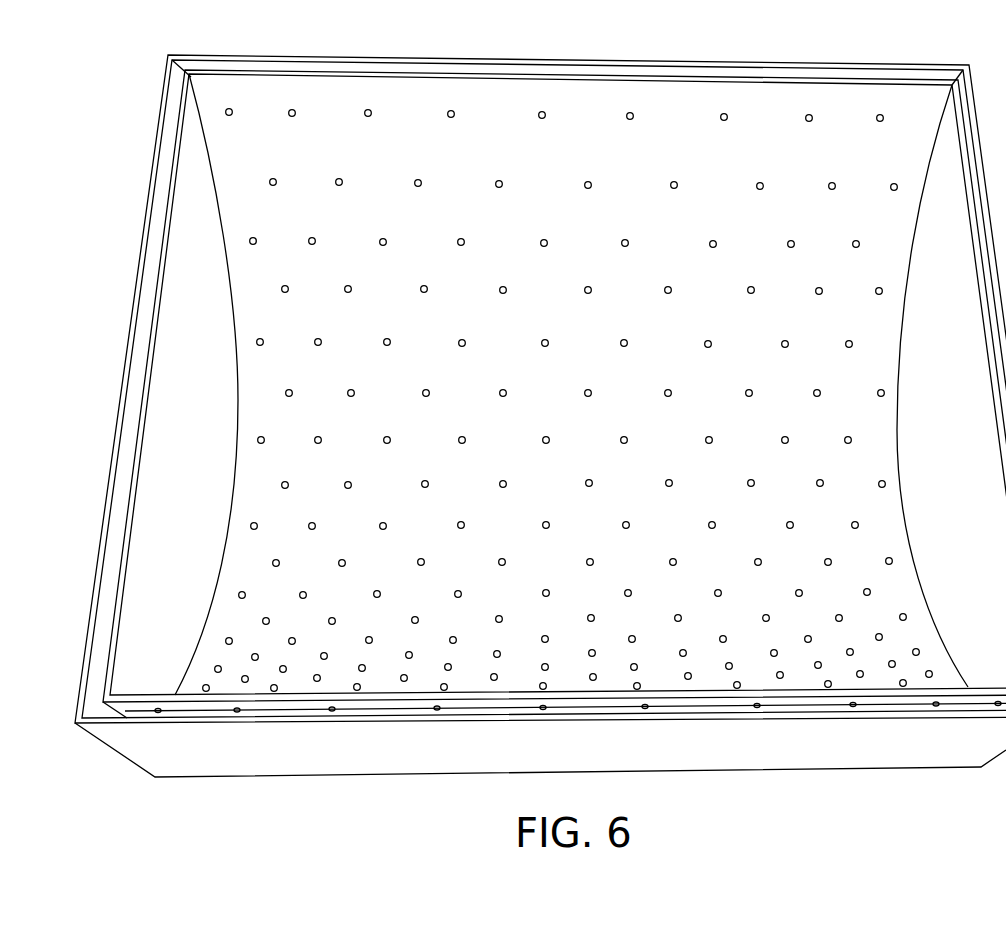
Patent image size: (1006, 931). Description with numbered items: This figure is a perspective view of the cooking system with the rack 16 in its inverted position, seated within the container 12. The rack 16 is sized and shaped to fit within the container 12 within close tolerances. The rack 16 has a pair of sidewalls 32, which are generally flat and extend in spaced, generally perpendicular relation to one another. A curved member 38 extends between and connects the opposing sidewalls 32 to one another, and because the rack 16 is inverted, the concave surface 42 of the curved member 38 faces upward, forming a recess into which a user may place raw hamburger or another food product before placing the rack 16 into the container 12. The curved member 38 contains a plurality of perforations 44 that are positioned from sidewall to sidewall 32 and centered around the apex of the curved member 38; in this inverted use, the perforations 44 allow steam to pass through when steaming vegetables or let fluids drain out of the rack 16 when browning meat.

The container 12 is at (152, 128).
The rack 16 is at (165, 240).
The sidewalls 32 is at (215, 373).
The curved member 38 is at (583, 113).
The concave surface 42 is at (598, 445).
The perforations 44 is at (415, 180).